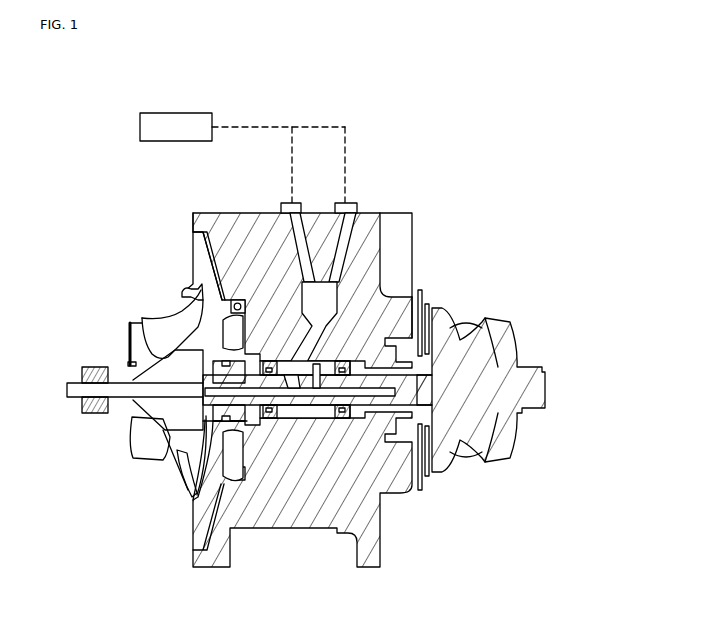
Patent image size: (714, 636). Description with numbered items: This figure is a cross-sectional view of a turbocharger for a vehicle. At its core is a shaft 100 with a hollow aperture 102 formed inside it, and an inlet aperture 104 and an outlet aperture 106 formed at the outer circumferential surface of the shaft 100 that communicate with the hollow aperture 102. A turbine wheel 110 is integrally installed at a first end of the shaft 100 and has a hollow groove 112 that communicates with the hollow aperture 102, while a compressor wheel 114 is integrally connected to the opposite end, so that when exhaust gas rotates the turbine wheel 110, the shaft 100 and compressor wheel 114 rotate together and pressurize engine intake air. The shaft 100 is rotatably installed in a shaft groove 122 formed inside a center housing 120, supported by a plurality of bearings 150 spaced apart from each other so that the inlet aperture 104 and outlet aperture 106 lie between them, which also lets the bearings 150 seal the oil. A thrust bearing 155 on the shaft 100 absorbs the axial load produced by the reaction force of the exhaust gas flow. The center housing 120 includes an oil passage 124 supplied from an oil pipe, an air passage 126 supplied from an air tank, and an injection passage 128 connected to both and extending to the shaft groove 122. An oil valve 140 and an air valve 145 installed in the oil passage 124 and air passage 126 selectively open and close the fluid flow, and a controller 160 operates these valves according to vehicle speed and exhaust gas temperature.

The shaft 100 is at (213, 363).
The hollow aperture 102 is at (330, 420).
The inlet aperture 104 is at (288, 363).
The outlet aperture 106 is at (380, 384).
The turbine wheel 110 is at (173, 443).
The hollow groove 112 is at (155, 393).
The compressor wheel 114 is at (478, 346).
The center housing 120 is at (193, 216).
The shaft groove 122 is at (395, 408).
The oil passage 124 is at (303, 258).
The air passage 126 is at (340, 230).
The injection passage 128 is at (422, 300).
The oil valve 140 is at (283, 203).
The air valve 145 is at (355, 203).
The bearings 150 is at (270, 418).
The thrust bearing 155 is at (212, 376).
The controller 160 is at (196, 113).